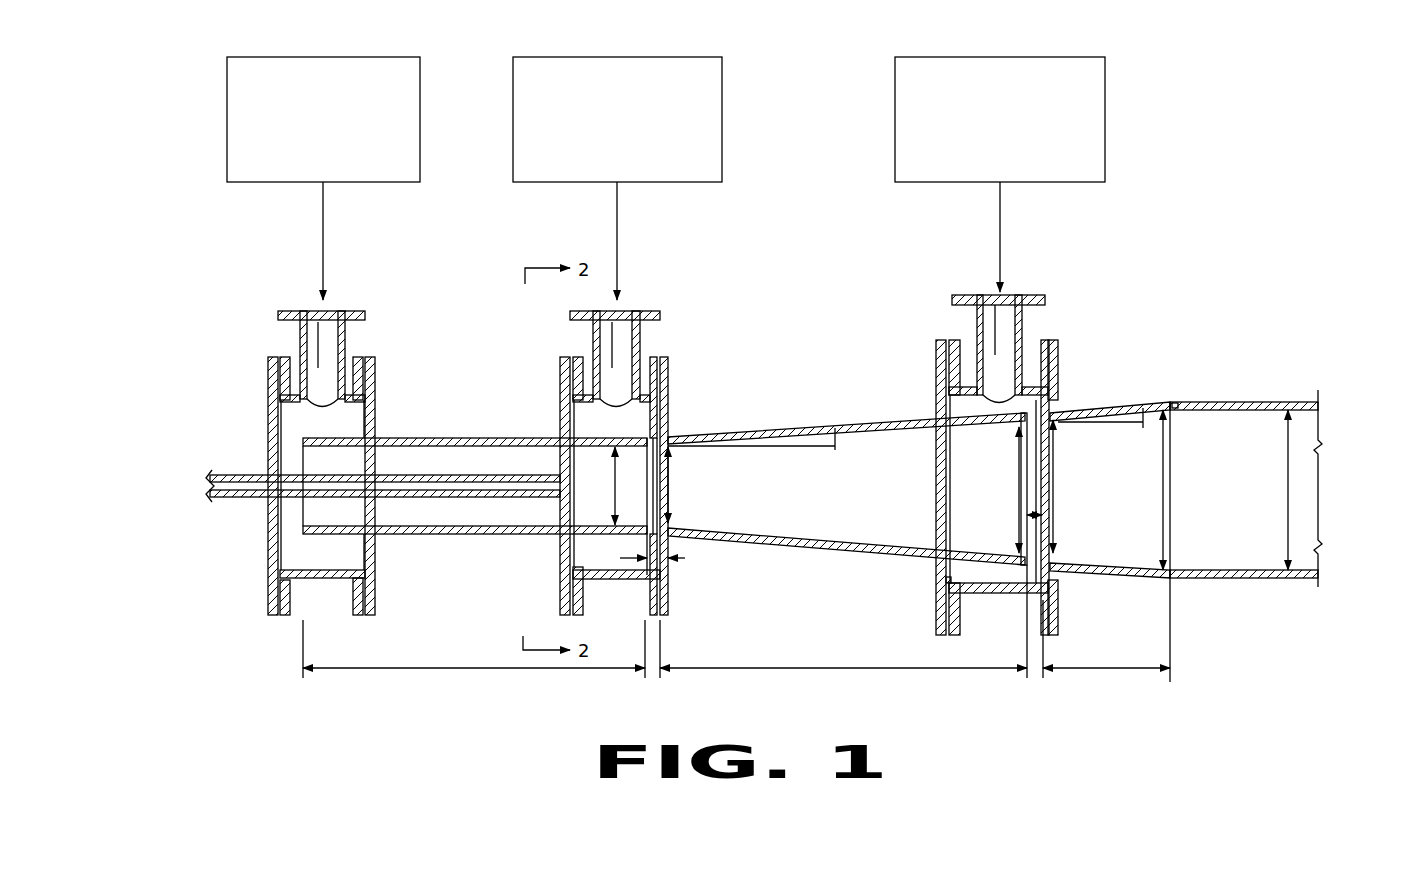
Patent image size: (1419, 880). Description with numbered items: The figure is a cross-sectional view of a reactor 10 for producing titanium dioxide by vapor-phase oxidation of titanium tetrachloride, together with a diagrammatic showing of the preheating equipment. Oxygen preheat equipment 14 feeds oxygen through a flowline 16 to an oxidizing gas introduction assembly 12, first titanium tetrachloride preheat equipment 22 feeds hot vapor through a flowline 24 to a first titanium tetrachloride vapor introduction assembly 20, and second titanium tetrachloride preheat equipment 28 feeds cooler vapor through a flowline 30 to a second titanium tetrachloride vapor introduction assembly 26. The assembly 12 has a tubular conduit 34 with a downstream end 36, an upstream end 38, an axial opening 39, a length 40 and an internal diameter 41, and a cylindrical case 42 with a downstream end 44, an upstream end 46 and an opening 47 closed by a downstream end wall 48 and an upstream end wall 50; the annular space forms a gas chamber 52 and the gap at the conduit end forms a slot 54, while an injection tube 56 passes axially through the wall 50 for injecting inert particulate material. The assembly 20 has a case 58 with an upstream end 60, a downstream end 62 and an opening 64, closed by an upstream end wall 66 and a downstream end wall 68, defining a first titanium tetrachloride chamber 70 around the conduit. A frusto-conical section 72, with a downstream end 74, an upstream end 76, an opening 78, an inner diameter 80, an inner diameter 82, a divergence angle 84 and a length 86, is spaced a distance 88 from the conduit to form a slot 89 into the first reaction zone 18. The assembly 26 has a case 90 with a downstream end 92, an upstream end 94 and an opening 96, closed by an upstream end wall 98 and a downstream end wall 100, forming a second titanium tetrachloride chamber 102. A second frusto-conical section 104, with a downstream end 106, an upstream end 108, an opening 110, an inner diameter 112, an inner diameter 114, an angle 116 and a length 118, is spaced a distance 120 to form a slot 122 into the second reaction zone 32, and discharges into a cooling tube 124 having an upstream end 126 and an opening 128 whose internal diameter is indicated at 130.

The reactor 10 is at (805, 412).
The oxidizing gas introduction assembly 12 is at (365, 340).
The oxygen preheat equipment 14 is at (368, 55).
The flowline 16 is at (325, 240).
The first reaction zone 18 is at (770, 505).
The first titanium tetrachloride vapor introduction assembly 20 is at (648, 344).
The first titanium tetrachloride preheat equipment 22 is at (645, 55).
The flowline 24 is at (619, 228).
The second titanium tetrachloride vapor introduction assembly 26 is at (1033, 325).
The second titanium tetrachloride preheat equipment 28 is at (1033, 55).
The flowline 30 is at (1002, 235).
The second reaction zone 32 is at (1143, 515).
The tubular conduit 34 is at (441, 526).
The downstream end 36 is at (650, 522).
The upstream end 38 is at (302, 530).
The opening 39 is at (487, 520).
The length 40 is at (477, 668).
The internal diameter 41 is at (614, 488).
The case 42 is at (296, 372).
The downstream end 44 is at (365, 583).
The upstream end 46 is at (278, 590).
The opening 47 is at (342, 556).
The downstream end wall 48 is at (365, 578).
The upstream end wall 50 is at (268, 545).
The gas chamber 52 is at (312, 421).
The slot 54 is at (292, 456).
The injection tube 56 is at (491, 475).
The case 58 is at (605, 583).
The upstream end 60 is at (570, 585).
The downstream end 62 is at (660, 590).
The opening 64 is at (606, 570).
The upstream end wall 66 is at (560, 603).
The downstream end wall 68 is at (670, 604).
The first titanium tetrachloride chamber 70 is at (603, 425).
The frusto-conical section 72 is at (824, 548).
The downstream end 74 is at (1025, 545).
The upstream end 76 is at (670, 455).
The opening 78 is at (875, 430).
The inner diameter 80 is at (667, 486).
The inner diameter 82 is at (1019, 451).
The angle 84 is at (841, 450).
The length 86 is at (852, 668).
The distance 88 is at (685, 558).
The slot 89 is at (656, 442).
The case 90 is at (988, 590).
The downstream end 92 is at (1057, 598).
The upstream end 94 is at (946, 598).
The opening 96 is at (985, 580).
The upstream end wall 98 is at (947, 620).
The downstream end wall 100 is at (1058, 618).
The second titanium tetrachloride chamber 102 is at (982, 408).
The frusto-conical section 104 is at (1130, 390).
The downstream end 106 is at (1178, 408).
The upstream end 108 is at (1048, 555).
The opening 110 is at (1128, 566).
The inner diameter 112 is at (1055, 497).
The inner diameter 114 is at (1165, 455).
The angle 116 is at (1143, 428).
The length 118 is at (1130, 668).
The distance 120 is at (1032, 513).
The slot 122 is at (1037, 420).
The cooling tube 124 is at (1258, 578).
The upstream end 126 is at (1170, 582).
The opening 128 is at (1300, 570).
The outlet pipe diameter 130 is at (1290, 470).